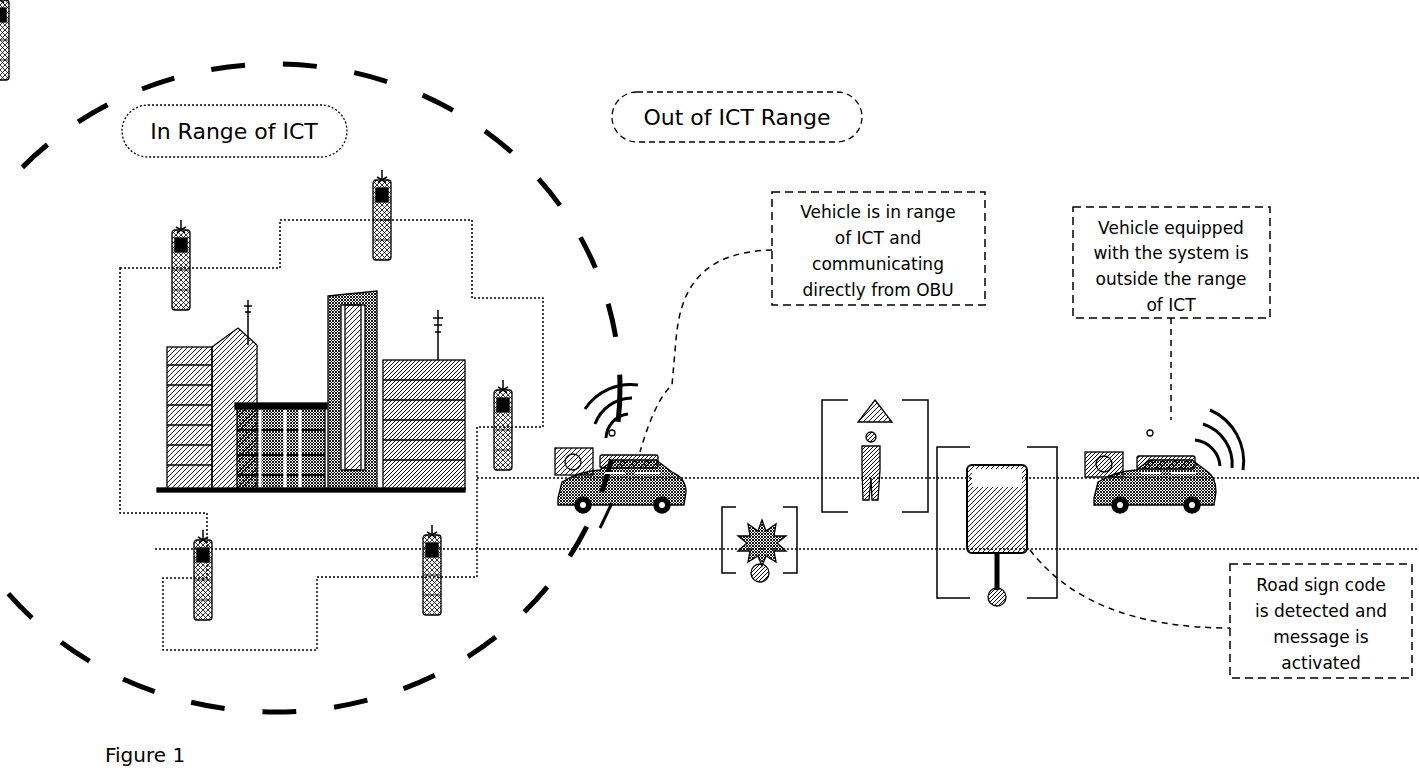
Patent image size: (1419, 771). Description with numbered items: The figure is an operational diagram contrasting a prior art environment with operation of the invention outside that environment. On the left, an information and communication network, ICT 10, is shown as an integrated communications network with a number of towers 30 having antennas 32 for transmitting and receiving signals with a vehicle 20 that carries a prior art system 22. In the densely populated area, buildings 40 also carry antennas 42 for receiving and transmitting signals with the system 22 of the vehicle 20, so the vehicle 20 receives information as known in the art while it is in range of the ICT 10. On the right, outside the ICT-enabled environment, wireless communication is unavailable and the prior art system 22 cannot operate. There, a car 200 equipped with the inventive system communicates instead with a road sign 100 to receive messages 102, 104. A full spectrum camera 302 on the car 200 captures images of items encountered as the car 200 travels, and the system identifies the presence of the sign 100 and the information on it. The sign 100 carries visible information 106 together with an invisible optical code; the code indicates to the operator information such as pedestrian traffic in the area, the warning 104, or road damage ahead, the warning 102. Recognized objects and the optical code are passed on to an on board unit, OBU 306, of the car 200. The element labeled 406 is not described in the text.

The information and communication networks (ICT) 10 is at (383, 135).
The vehicle 20 is at (637, 495).
The prior art system 22 is at (640, 462).
The towers 30 is at (180, 290).
The antennas 32 is at (180, 230).
The buildings 40 is at (247, 383).
The antennas 42 is at (247, 300).
The road sign 100 is at (983, 525).
The message 102 is at (785, 548).
The message 104 is at (895, 415).
The visible information 106 is at (1013, 480).
The car 200 is at (1163, 503).
The full spectrum camera 302 is at (1103, 453).
The on board unit (OBU) 306 is at (1173, 460).
The sign post 406 is at (982, 542).